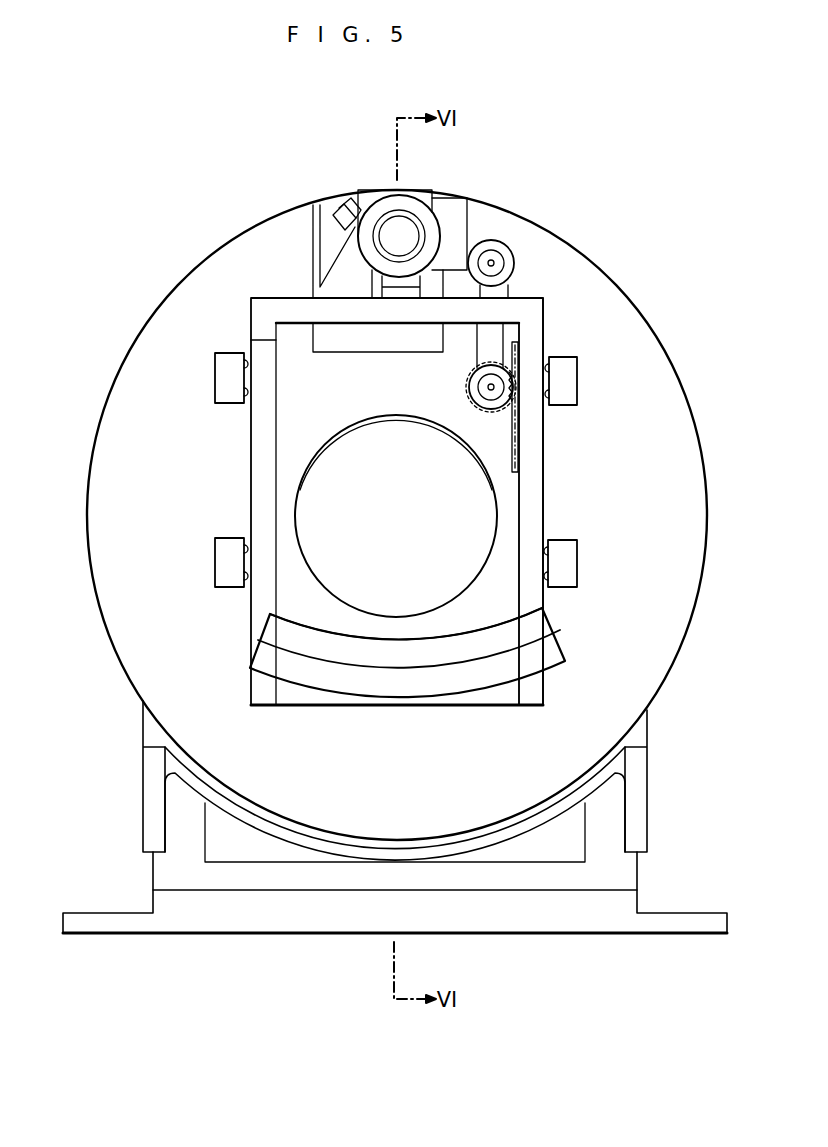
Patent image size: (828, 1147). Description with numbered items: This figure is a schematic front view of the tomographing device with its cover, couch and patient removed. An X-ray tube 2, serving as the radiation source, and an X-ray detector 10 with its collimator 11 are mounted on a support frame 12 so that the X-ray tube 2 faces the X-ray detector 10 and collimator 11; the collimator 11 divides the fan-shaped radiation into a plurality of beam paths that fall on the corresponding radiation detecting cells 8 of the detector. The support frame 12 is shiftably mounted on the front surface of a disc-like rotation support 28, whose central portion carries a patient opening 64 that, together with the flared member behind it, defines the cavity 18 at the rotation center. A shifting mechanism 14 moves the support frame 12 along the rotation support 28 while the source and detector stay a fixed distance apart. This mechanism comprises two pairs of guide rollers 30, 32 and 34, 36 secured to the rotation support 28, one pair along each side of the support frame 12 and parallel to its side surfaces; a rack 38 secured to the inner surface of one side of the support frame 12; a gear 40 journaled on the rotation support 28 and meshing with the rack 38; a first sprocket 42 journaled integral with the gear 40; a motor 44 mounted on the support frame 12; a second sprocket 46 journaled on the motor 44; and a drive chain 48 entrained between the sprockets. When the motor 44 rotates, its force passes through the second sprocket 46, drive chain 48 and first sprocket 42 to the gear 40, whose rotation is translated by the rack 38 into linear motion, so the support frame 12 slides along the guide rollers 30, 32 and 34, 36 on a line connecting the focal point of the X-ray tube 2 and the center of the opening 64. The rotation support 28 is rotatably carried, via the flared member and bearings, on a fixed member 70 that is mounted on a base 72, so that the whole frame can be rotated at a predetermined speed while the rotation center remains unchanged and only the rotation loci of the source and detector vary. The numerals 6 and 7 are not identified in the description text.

The X-ray tube 2 is at (413, 198).
The support bar 6 is at (387, 293).
The mounting bracket 7 is at (378, 284).
The radiation detecting cells 8 is at (372, 688).
The X-ray detector 10 is at (306, 688).
The collimator 11 is at (478, 640).
The support frame 12 is at (533, 483).
The shifting mechanism 14 is at (514, 237).
The cavity 18 is at (360, 418).
The rotation support 28 is at (690, 426).
The guide roller 30 is at (575, 388).
The guide roller 32 is at (572, 563).
The guide roller 34 is at (222, 380).
The guide roller 36 is at (222, 560).
The rack 38 is at (516, 345).
The gear 40 is at (470, 387).
The first sprocket 42 is at (492, 396).
The motor 44 is at (508, 258).
The second sprocket 46 is at (497, 268).
The drive chain 48 is at (478, 352).
The patient opening 64 is at (428, 418).
The fixed member 70 is at (643, 735).
The base 72 is at (640, 870).